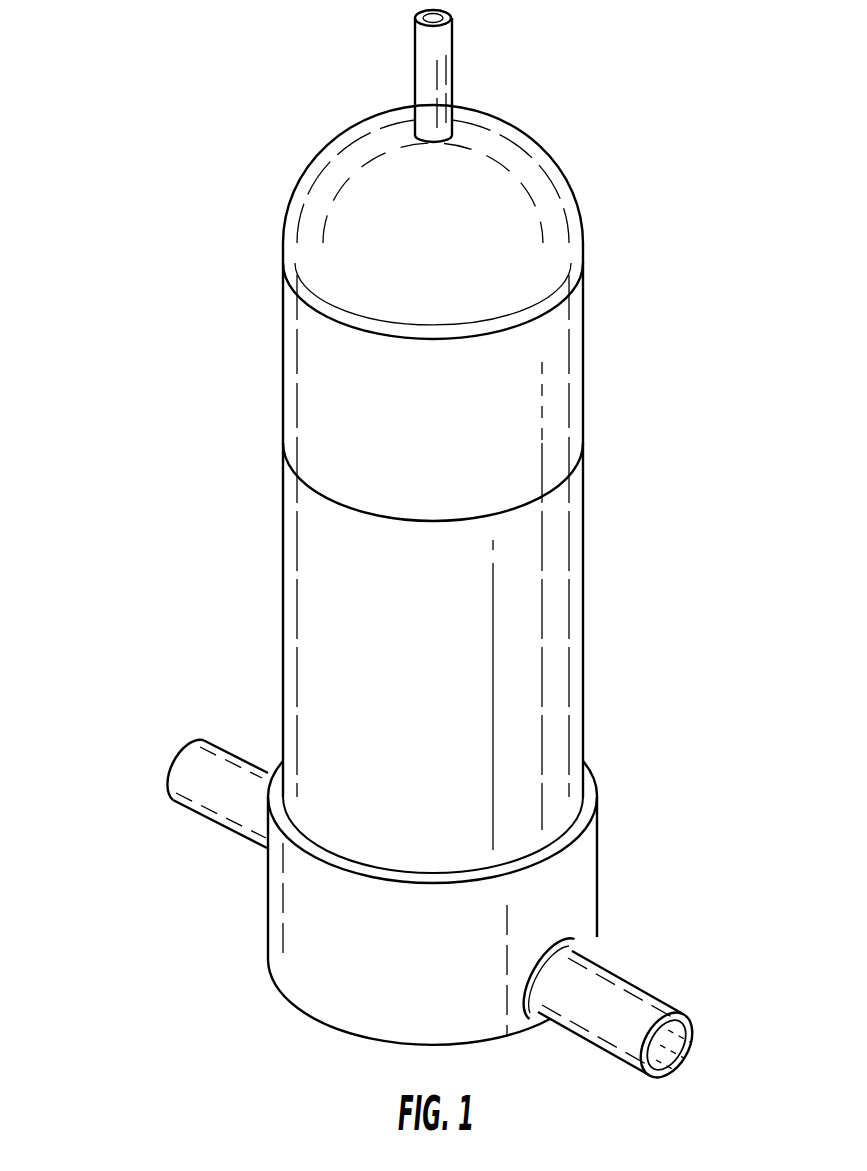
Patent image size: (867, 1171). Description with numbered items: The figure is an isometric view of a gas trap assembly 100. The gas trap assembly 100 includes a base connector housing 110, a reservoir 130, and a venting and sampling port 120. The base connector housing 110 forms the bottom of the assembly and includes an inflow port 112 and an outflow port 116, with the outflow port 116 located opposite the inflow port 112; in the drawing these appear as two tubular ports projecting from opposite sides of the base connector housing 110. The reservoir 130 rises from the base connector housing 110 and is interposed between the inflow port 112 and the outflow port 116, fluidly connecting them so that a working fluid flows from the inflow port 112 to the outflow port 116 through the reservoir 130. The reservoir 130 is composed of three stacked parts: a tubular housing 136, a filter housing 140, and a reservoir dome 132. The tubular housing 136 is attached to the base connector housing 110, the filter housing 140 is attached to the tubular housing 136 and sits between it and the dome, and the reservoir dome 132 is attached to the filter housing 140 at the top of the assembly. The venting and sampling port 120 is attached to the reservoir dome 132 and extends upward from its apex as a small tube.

The gas trap assembly 100 is at (105, 168).
The base connector housing 110 is at (367, 970).
The inflow port 112 is at (625, 1003).
The outflow port 116 is at (213, 810).
The venting and sampling port 120 is at (442, 75).
The reservoir 130 is at (250, 102).
The reservoir dome 132 is at (492, 197).
The tubular housing 136 is at (552, 647).
The filter housing 140 is at (515, 415).